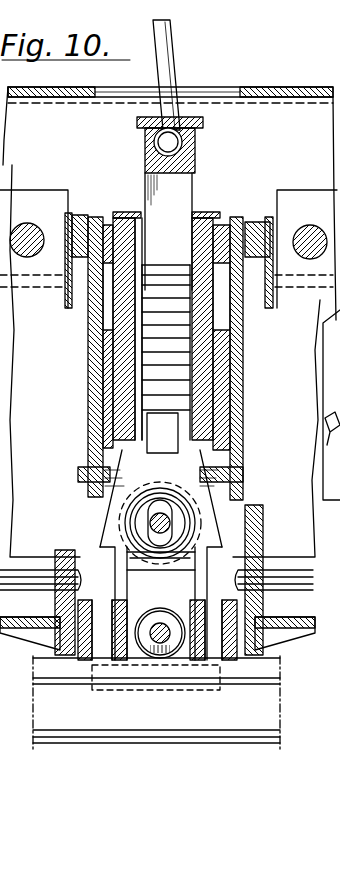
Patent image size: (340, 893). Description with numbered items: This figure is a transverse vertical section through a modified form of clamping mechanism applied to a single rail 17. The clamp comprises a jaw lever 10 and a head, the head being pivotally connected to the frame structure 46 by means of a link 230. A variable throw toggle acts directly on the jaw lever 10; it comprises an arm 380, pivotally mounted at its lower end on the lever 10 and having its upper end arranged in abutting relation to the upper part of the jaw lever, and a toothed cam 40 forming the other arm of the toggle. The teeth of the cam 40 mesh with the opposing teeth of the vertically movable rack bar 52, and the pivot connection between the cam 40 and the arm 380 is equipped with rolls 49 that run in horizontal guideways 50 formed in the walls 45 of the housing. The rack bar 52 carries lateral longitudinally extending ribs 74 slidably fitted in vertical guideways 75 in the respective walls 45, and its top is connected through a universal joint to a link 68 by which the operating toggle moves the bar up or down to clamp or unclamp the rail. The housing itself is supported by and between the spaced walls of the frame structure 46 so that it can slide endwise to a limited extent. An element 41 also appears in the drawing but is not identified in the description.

The link 68 is at (174, 53).
The toggle actuating bar 52 is at (170, 203).
The vertical guideways 75 is at (136, 215).
The lateral longitudinally extending ribs 74 is at (216, 215).
The toothed cam 40 is at (90, 338).
The walls of the housing structure 45 is at (110, 355).
The rolls 49 is at (92, 387).
The horizontal guideways 50 is at (115, 410).
The frame structure 46 is at (88, 438).
The arm 380 is at (120, 518).
The lever 10 is at (105, 558).
The link 230 is at (265, 495).
The rail 17 is at (165, 740).
The detail 41 is at (331, 405).